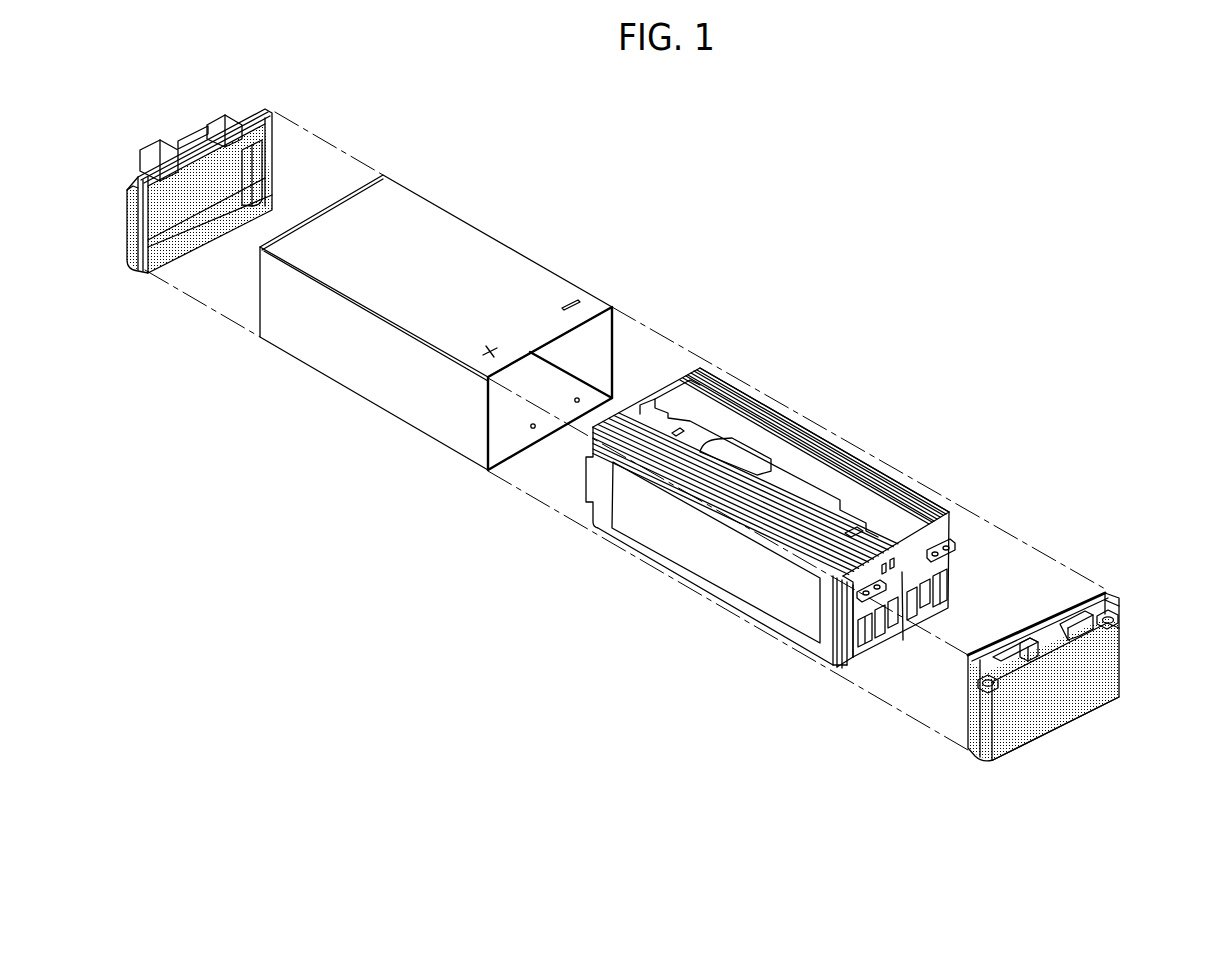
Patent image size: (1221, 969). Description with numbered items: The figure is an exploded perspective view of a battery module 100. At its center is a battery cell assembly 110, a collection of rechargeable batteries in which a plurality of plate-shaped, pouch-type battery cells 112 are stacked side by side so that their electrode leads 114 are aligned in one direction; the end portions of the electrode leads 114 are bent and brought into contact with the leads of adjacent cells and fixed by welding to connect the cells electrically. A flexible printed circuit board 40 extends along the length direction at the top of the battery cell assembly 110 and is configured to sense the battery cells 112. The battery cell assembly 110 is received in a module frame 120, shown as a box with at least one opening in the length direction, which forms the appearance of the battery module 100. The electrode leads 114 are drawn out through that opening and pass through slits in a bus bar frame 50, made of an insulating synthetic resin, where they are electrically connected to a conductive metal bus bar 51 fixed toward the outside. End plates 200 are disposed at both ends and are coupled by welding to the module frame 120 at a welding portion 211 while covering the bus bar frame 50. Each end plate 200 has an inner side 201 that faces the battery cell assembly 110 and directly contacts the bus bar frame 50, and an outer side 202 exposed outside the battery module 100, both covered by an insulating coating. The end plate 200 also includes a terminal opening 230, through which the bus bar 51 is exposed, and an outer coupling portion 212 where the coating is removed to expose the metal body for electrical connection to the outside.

The battery module 100 is at (758, 260).
The inner side 201 is at (226, 150).
The module frame 120 is at (430, 417).
The battery cell assembly 110 is at (843, 450).
The flexible printed circuit board 40 is at (757, 447).
The bus bar frame 50 is at (850, 660).
The battery cell 112 is at (767, 607).
The bus bar 51 is at (948, 548).
The electrode lead 114 is at (948, 572).
The end plate 200 is at (1050, 657).
The outer side 202 is at (1068, 713).
The welding portion 211 is at (973, 735).
The outer coupling portion 212 is at (1121, 615).
The terminal opening 230 is at (1083, 620).